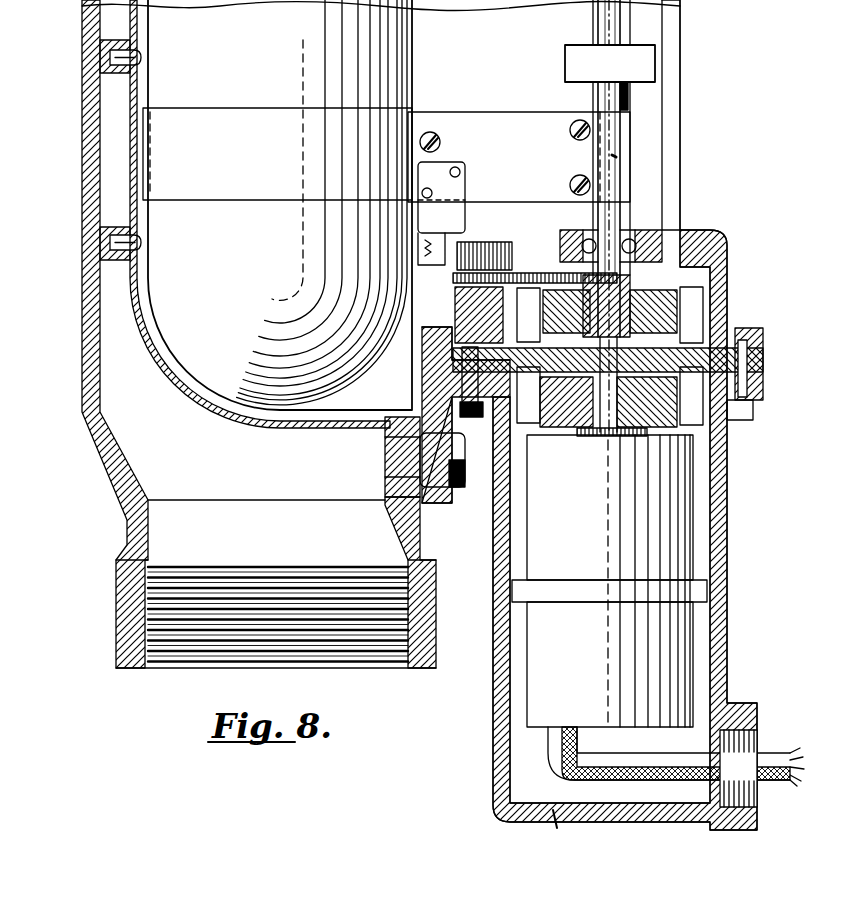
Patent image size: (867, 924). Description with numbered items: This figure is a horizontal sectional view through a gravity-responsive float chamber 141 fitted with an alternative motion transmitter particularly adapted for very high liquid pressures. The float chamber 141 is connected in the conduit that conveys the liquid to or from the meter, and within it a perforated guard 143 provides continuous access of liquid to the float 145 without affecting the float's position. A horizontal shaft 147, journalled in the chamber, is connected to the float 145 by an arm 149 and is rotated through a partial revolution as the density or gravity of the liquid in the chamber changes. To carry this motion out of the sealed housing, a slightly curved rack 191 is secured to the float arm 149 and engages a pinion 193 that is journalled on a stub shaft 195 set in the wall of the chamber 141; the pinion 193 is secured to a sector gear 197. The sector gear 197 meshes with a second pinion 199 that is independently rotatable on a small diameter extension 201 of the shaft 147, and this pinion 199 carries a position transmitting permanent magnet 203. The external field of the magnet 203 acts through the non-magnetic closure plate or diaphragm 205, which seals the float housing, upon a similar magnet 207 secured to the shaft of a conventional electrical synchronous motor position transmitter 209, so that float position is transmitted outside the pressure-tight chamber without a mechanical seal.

The float chamber 141 is at (82, 382).
The perforated guard 143 is at (232, 426).
The float 145 is at (388, 52).
The horizontal shaft 147 is at (612, 216).
The arm 149 is at (490, 135).
The curved rack 191 is at (446, 252).
The pinion 193 is at (499, 247).
The stub shaft 195 is at (457, 298).
The sector gear 197 is at (515, 272).
The pinion 199 is at (637, 279).
The small diameter extension 201 is at (594, 338).
The position transmitting permanent magnet 203 is at (692, 305).
The non-magnetic closure plate 205 is at (626, 350).
The magnet 207 is at (693, 417).
The electrical synchronous motor position transmitter 209 is at (540, 524).